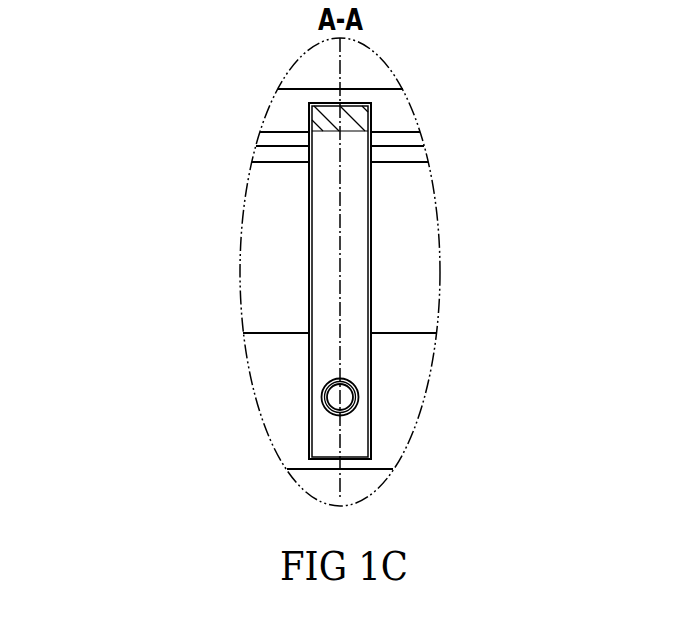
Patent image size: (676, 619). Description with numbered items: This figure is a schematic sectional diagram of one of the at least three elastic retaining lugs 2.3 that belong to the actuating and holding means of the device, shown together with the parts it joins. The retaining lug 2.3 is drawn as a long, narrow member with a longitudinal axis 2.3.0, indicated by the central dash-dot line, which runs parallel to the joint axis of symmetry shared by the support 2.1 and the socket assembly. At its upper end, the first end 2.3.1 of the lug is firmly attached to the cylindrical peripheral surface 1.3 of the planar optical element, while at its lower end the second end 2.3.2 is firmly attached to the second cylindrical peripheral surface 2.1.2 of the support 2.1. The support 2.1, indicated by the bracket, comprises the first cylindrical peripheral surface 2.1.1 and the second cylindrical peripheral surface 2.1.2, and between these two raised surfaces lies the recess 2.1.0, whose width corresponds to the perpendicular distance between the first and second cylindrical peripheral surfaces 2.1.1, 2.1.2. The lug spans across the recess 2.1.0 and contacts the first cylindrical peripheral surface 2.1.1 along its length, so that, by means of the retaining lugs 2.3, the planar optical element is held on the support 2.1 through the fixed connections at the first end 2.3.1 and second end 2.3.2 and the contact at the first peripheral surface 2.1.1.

The cylindrical peripheral surface 1.3 is at (397, 115).
The support 2.1 is at (90, 173).
The recess 2.1.0 is at (293, 237).
The first cylindrical peripheral surface 2.1.1 is at (275, 153).
The second cylindrical peripheral surface 2.1.2 is at (277, 363).
The elastic retaining lug 2.3 is at (407, 277).
The longitudinal axis 2.3.0 is at (340, 80).
The first end 2.3.1 is at (371, 105).
The second end 2.3.2 is at (371, 454).